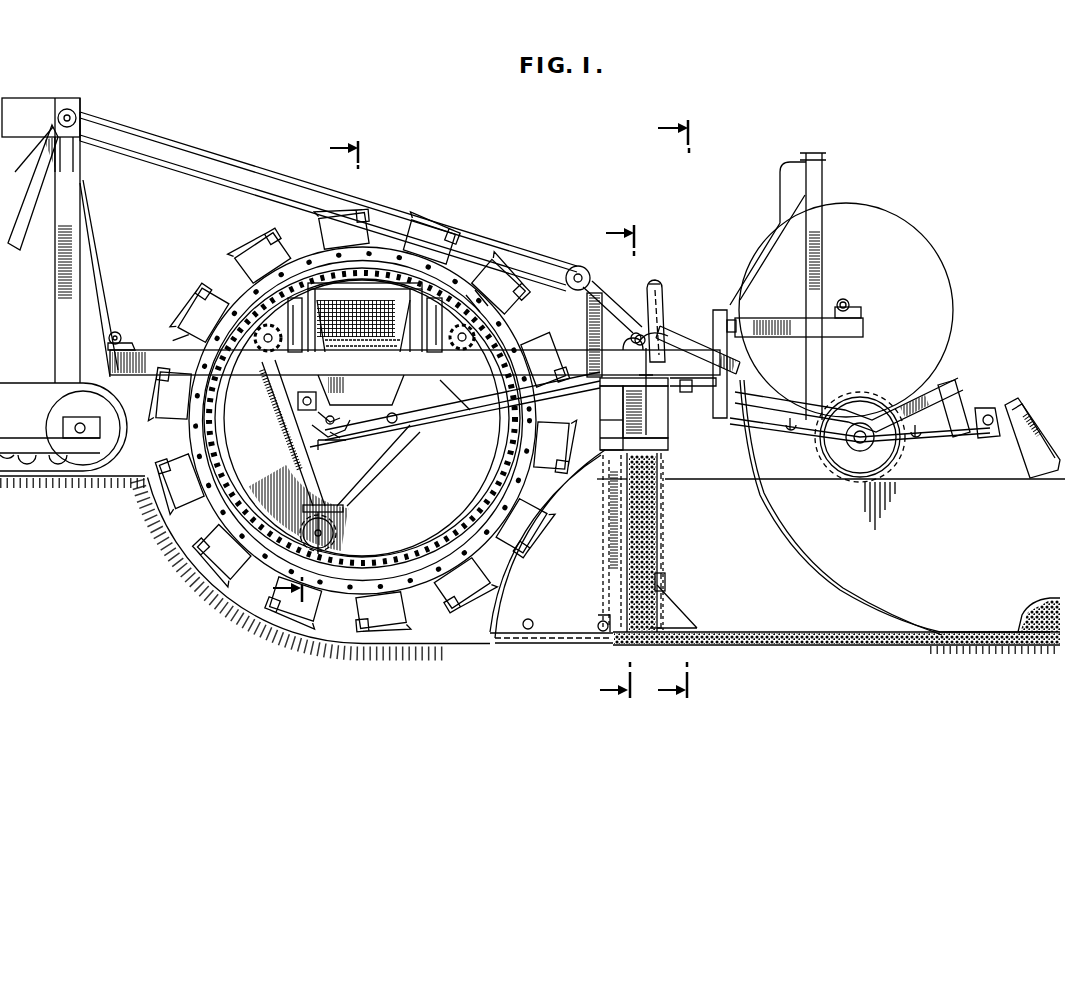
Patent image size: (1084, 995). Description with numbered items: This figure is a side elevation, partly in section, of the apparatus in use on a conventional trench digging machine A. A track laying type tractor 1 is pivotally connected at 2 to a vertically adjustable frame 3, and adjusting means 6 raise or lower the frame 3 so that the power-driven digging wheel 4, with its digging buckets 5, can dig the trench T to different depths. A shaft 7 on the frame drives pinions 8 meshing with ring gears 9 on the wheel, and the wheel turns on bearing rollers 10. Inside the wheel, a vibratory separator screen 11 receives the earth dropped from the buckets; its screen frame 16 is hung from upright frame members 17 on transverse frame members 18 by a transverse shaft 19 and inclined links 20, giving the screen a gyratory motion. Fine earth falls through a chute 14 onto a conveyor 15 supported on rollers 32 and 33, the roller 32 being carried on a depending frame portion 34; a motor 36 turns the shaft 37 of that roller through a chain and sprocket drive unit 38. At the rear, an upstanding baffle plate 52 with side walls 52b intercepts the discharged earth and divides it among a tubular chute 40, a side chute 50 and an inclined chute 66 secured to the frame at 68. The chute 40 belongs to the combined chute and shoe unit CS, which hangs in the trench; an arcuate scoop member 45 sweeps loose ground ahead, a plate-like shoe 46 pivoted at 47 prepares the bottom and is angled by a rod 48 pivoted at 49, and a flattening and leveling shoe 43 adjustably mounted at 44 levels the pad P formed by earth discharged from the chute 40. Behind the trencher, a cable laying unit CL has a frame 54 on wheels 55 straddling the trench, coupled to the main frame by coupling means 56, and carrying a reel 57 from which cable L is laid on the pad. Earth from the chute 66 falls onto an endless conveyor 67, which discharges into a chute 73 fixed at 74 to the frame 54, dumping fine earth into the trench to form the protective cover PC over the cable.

The track laying type tractor 1 is at (12, 383).
The pivotal connection 2 is at (116, 332).
The vertically adjustable frame 3 is at (169, 341).
The power-driven digging wheel 4 is at (215, 506).
The digging buckets 5 is at (248, 248).
The vertical adjusting means 6 is at (165, 122).
The shaft 7 is at (262, 352).
The pinions 8 is at (232, 290).
The ring gears 9 is at (256, 300).
The bearing rollers 10 is at (340, 530).
The vibratory separator screen 11 is at (383, 307).
The chute 14 is at (361, 391).
The conveyor 15 is at (475, 430).
The screen frame 16 is at (322, 268).
The upright frame members 17 is at (438, 340).
The transverse frame members 18 is at (296, 340).
The transverse shaft 19 is at (440, 284).
The links 20 is at (470, 300).
The conveyor roller 32 is at (372, 440).
The conveyor roller 33 is at (623, 353).
The depending frame portion 34 is at (346, 470).
The motor 36 is at (308, 400).
The shaft 37 is at (332, 430).
The chain and sprocket drive unit 38 is at (322, 415).
The tubular chute 40 is at (660, 540).
The flattening and leveling shoe 43 is at (668, 622).
The vertically adjustable mounting 44 is at (662, 592).
The arcuate scoop member 45 is at (545, 590).
The plate-like shoe 46 is at (555, 640).
The pivot 47 is at (532, 622).
The rod 48 is at (606, 552).
The pivot 49 is at (600, 624).
The chute 50 is at (658, 432).
The baffle plate 52 is at (662, 305).
The side walls 52b is at (656, 290).
The frame 54 is at (962, 381).
The wheels 55 is at (830, 453).
The coupling means 56 is at (684, 392).
The reel 57 is at (930, 276).
The chute 66 is at (690, 350).
The endless conveyor 67 is at (942, 444).
The securing point 68 is at (670, 340).
The chute 73 is at (1024, 445).
The fixing point 74 is at (981, 432).
The trench digging machine A is at (435, 199).
The cable laying unit CL is at (959, 334).
The combined chute and shoe unit CS is at (674, 521).
The cable L is at (816, 552).
The pad P is at (770, 636).
The protective cover PC is at (1043, 600).
The trench T is at (742, 618).